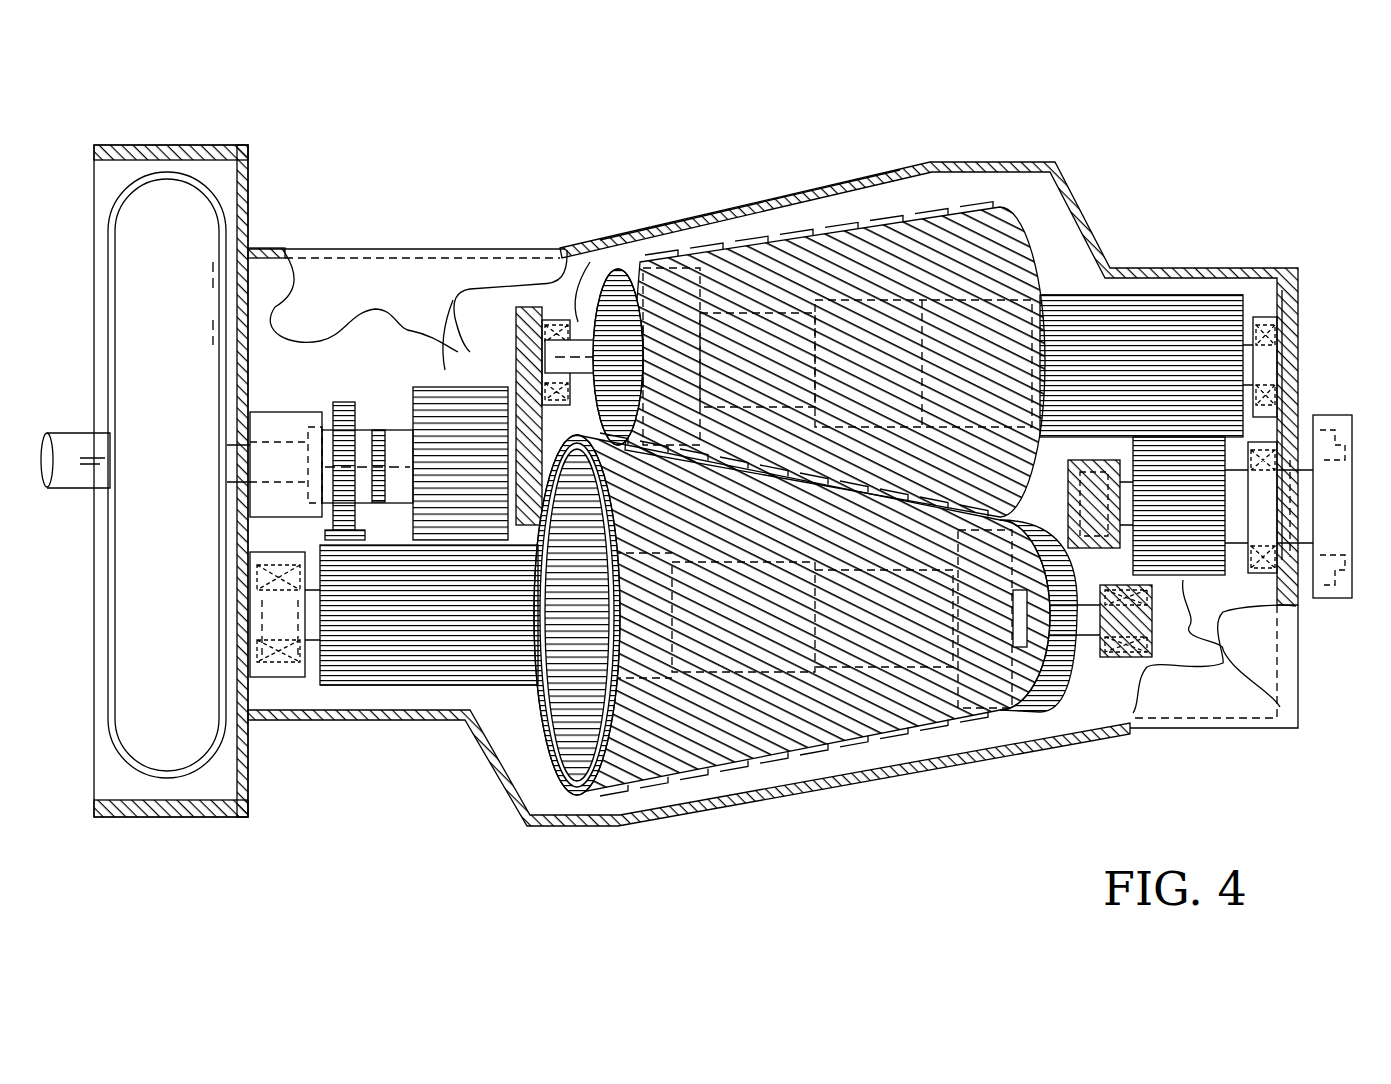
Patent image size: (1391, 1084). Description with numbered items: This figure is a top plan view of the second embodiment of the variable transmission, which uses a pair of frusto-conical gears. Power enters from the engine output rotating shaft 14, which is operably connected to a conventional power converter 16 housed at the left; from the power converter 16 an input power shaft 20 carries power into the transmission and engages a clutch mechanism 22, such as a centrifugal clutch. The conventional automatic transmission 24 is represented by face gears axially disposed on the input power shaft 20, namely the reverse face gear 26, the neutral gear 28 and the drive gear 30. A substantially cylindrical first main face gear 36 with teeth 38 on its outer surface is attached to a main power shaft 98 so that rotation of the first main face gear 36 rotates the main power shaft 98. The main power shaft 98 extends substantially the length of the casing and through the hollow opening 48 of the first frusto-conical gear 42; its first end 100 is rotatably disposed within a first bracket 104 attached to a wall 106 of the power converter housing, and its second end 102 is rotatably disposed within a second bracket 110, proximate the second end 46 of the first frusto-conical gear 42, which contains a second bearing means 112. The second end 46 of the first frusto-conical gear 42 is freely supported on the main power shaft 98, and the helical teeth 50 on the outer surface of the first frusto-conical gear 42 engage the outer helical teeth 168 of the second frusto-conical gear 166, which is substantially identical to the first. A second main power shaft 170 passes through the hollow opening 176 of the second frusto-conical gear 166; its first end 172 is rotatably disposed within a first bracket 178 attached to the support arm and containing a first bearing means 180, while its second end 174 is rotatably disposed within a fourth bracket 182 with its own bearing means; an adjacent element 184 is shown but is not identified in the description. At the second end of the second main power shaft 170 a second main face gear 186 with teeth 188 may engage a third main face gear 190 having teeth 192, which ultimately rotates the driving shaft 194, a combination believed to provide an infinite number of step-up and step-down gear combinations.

The engine output rotating shaft 14 is at (68, 440).
The power converter 16 is at (713, 212).
The input power shaft 20 is at (228, 460).
The clutch mechanism 22 is at (272, 410).
The automatic transmission 24 is at (385, 425).
The reverse face gear 26 is at (344, 400).
The neutral gear 28 is at (378, 428).
The drive gear 30 is at (430, 385).
The first main face gear 36 is at (443, 660).
The teeth 38 is at (388, 690).
The first frusto-conical gear 42 is at (745, 735).
The second end 46 is at (1040, 720).
The hollow opening 48 is at (555, 760).
The helical teeth 50 is at (798, 760).
The main power shaft 98 is at (312, 686).
The first end 100 is at (283, 617).
The second end 102 is at (1088, 655).
The first bracket 104 is at (293, 680).
The wall 106 is at (237, 785).
The second bracket 110 is at (1118, 625).
The second bearing means 112 is at (1115, 640).
The second frusto-conical gear 166 is at (843, 194).
The outer helical teeth 168 is at (765, 243).
The second main power shaft 170 is at (585, 262).
The first end 172 is at (545, 330).
The second end 174 is at (1290, 300).
The hollow opening 176 is at (618, 270).
The first bracket 178 is at (527, 320).
The first bearing means 180 is at (540, 397).
The fourth bracket 182 is at (1265, 320).
The bearing 184 is at (1290, 395).
The second main face gear 186 is at (1135, 300).
The teeth 188 is at (1095, 298).
The third main face gear 190 is at (1235, 578).
The teeth 192 is at (1280, 705).
The driving shaft 194 is at (1352, 470).